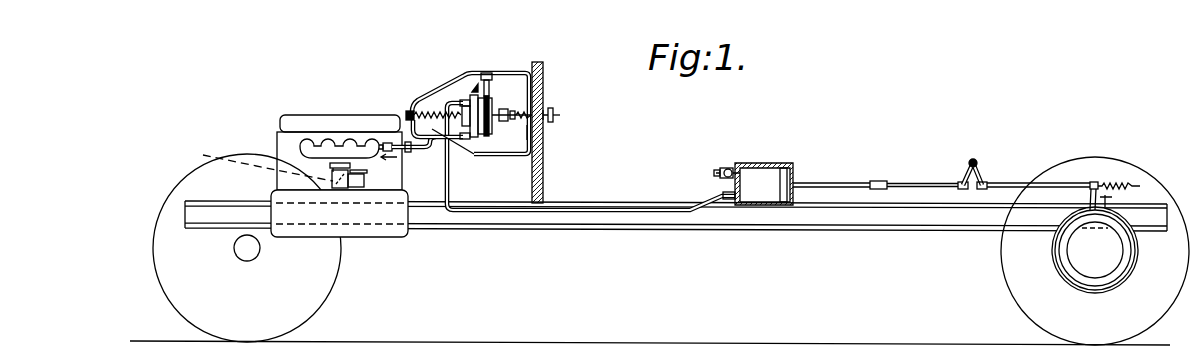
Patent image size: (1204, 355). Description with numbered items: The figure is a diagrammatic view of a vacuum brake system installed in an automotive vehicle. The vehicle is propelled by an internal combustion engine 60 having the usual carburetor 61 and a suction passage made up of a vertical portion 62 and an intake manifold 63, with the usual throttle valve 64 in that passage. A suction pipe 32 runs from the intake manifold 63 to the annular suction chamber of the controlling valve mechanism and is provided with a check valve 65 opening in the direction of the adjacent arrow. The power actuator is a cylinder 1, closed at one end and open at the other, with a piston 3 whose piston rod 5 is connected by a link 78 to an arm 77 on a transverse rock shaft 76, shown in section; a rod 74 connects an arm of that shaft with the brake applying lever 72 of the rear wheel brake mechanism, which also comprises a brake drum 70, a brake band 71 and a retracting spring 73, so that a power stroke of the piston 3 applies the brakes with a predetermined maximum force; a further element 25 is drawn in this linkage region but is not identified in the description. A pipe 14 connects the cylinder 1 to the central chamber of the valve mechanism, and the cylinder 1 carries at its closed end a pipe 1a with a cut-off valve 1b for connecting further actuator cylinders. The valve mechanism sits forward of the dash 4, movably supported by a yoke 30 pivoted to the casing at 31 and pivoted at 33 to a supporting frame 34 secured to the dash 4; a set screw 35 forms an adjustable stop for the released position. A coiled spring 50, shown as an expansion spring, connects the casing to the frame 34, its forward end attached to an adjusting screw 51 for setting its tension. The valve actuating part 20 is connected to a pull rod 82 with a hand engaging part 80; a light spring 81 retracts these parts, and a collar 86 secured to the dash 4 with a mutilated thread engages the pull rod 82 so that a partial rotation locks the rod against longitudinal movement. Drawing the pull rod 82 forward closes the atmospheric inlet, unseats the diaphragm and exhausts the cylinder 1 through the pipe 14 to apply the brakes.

The cylinder 1 is at (755, 166).
The pipe 1a is at (720, 174).
The cut-off valve 1b is at (733, 172).
The piston 3 is at (788, 176).
The dash 4 is at (543, 68).
The piston rod 5 is at (825, 185).
The pipe 14 is at (592, 209).
The valve actuating part 20 is at (492, 138).
The brake rod 25 is at (986, 181).
The yoke 30 is at (490, 90).
The pivot 31 is at (482, 137).
The suction pipe 32 is at (474, 153).
The pivot 33 is at (487, 80).
The supporting frame 34 is at (460, 75).
The set screw 35 is at (476, 84).
The coiled spring 50 is at (432, 111).
The adjusting screw 51 is at (409, 111).
The internal combustion engine 60 is at (288, 118).
The carburetor 61 is at (364, 178).
The vertical portion 62 is at (330, 178).
The intake manifold 63 is at (333, 172).
The throttle valve 64 is at (254, 161).
The check valve 65 is at (385, 142).
The brake drum 70 is at (1066, 263).
The brake band 71 is at (1052, 246).
The brake applying lever 72 is at (1090, 189).
The retracting spring 73 is at (1118, 184).
The rod 74 is at (1014, 204).
The transverse rock shaft 76 is at (975, 161).
The arm 77 is at (962, 180).
The link 78 is at (904, 183).
The hand engaging part 80 is at (553, 115).
The spring 81 is at (525, 114).
The pull rod 82 is at (543, 138).
The collar 86 is at (541, 122).